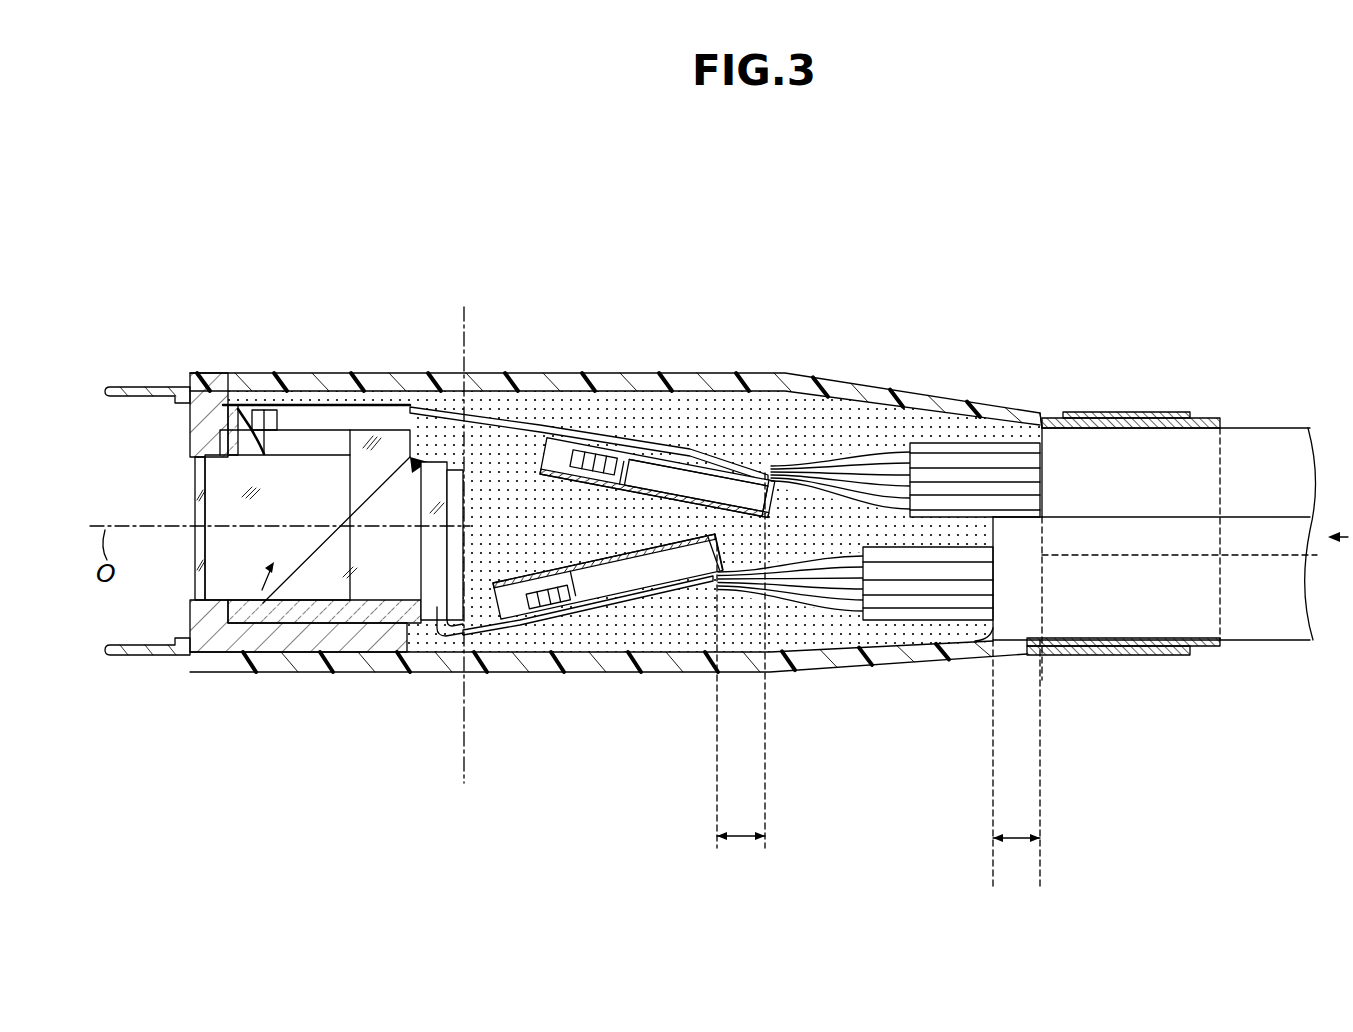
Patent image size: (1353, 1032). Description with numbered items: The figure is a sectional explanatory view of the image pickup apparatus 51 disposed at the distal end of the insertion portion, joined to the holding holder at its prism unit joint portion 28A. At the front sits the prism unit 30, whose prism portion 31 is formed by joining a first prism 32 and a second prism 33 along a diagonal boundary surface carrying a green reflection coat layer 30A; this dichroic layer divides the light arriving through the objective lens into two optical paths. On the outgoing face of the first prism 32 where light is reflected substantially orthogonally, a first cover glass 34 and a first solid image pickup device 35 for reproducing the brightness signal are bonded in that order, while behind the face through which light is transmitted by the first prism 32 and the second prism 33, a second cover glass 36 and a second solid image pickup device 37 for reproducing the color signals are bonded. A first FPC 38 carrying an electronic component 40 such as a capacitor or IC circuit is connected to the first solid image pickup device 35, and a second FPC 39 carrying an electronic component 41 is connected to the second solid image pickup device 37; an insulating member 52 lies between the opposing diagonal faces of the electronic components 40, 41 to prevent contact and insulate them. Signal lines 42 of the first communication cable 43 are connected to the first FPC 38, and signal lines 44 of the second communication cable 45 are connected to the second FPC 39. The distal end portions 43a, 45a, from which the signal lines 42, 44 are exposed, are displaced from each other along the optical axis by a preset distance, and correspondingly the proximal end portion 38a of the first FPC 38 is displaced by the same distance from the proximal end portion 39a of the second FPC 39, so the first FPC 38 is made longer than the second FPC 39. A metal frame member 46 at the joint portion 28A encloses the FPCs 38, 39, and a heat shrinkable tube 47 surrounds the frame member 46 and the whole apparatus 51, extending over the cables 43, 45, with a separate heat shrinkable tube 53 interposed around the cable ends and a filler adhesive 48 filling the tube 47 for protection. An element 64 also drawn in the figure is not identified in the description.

The prism unit joint portion 28A is at (156, 387).
The prism unit 30 is at (313, 418).
The green reflection coat layer 30A is at (320, 540).
The prism portion 31 is at (262, 578).
The first prism 32 is at (216, 585).
The second prism 33 is at (357, 578).
The first cover glass 34 is at (292, 438).
The first solid image pickup device 35 is at (366, 425).
The second cover glass 36 is at (428, 580).
The second solid image pickup device 37 is at (462, 578).
The first FPC 38 is at (425, 374).
The proximal end portion of the first FPC 38a is at (768, 472).
The second FPC 39 is at (502, 605).
The proximal end portion of the second FPC 39a is at (700, 537).
The electronic component 40 is at (668, 470).
The electronic component 41 is at (608, 568).
The signal lines 42 is at (867, 460).
The first communication cable 43 is at (1106, 455).
The distal end portion of the first communication cable 43a is at (1033, 423).
The signal lines 44 is at (751, 550).
The second communication cable 45 is at (1112, 607).
The distal end portion of the second communication cable 45a is at (980, 625).
The metal frame member 46 is at (567, 452).
The heat shrinkable tube 47 is at (631, 440).
The filler adhesive 48 is at (793, 517).
The image pickup apparatus 51 is at (668, 303).
The insulating member 52 is at (533, 528).
The heat shrinkable tube 53 is at (1203, 420).
The lead wires 64 is at (717, 468).